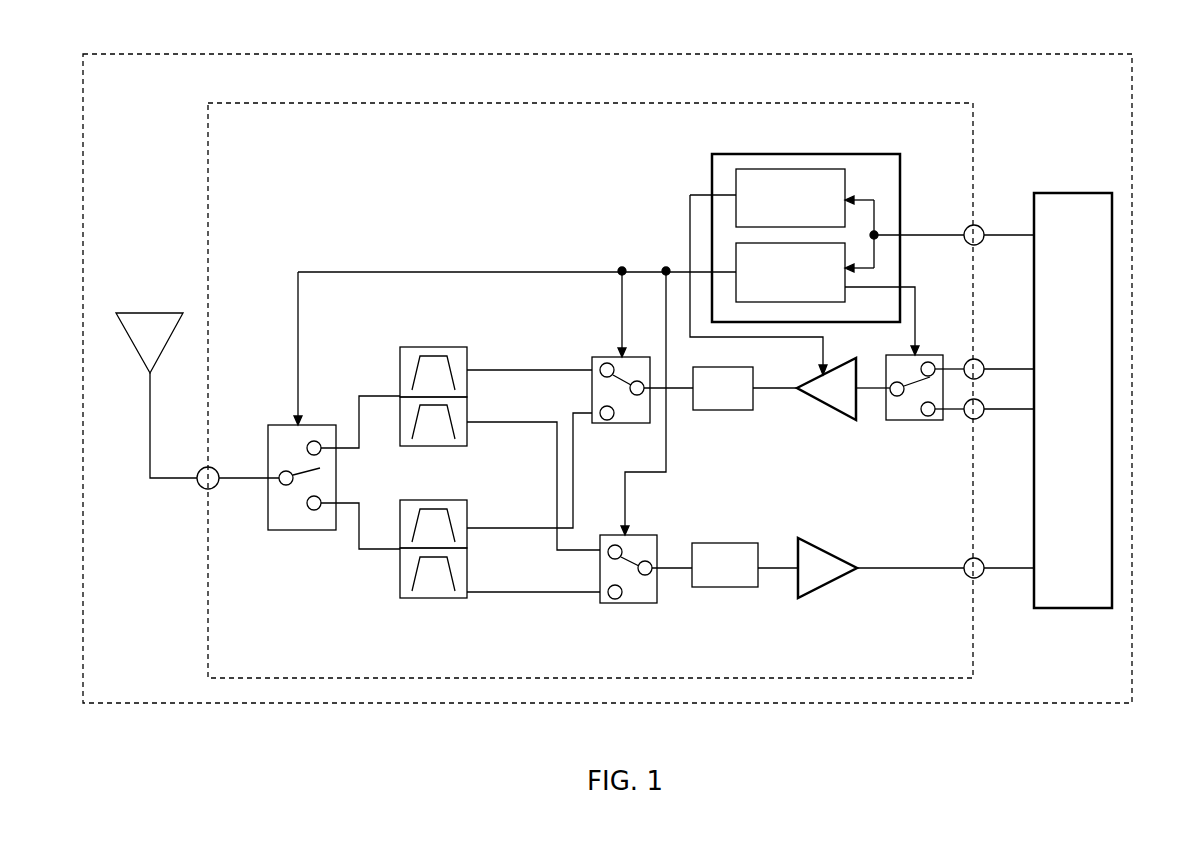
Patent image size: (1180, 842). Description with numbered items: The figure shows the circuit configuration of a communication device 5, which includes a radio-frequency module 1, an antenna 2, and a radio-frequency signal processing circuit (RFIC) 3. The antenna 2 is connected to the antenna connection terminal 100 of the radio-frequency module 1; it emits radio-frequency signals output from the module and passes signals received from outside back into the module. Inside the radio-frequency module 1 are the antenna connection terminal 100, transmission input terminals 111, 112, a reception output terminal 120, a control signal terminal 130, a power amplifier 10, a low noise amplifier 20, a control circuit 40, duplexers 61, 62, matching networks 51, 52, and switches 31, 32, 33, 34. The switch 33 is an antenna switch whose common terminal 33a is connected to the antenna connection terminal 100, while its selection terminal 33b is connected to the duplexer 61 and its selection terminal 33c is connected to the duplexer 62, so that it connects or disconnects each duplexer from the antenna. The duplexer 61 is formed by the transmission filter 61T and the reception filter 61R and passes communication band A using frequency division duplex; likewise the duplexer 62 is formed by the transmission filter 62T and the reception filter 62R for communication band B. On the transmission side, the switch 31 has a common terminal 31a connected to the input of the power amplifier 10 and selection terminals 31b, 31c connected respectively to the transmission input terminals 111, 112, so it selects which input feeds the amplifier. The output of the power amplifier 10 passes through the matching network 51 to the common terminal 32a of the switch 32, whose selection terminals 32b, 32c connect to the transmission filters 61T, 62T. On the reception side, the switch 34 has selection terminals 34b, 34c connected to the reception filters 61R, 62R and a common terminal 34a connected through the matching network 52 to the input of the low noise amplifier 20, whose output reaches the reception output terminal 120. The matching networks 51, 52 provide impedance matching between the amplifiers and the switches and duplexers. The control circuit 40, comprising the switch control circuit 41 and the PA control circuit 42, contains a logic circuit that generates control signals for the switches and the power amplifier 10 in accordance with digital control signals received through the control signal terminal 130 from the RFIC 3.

The communication device 5 is at (1119, 53).
The radio-frequency module 1 is at (728, 104).
The antenna 2 is at (155, 313).
The radio-frequency signal processing circuit (RFIC) 3 is at (1085, 193).
The antenna connection terminal 100 is at (201, 488).
The antenna switch 33 is at (282, 531).
The common terminal 33a is at (281, 471).
The selection terminal 33b is at (313, 441).
The selection terminal 33c is at (314, 512).
The duplexer 61 is at (500, 433).
The transmission filter 61T is at (468, 376).
The reception filter 61R is at (468, 415).
The duplexer 62 is at (500, 520).
The transmission filter 62T is at (468, 543).
The reception filter 62R is at (468, 583).
The second switch 32 is at (637, 357).
The common terminal 32a is at (637, 396).
The selection terminal 32b is at (606, 360).
The selection terminal 32c is at (608, 424).
The switch 34 is at (655, 603).
The common terminal 34a is at (645, 561).
The selection terminal 34b is at (613, 545).
The selection terminal 34c is at (616, 603).
The matching network 51 is at (726, 411).
The matching network 52 is at (727, 542).
The power amplifier 10 is at (822, 404).
The low noise amplifier 20 is at (829, 550).
The first switch 31 is at (915, 422).
The common terminal 31a is at (897, 397).
The selection terminal 31b is at (935, 361).
The selection terminal 31c is at (935, 416).
The control circuit 40 is at (898, 172).
The switch control circuit 41 is at (853, 291).
The PA control circuit 42 is at (848, 191).
The transmission input terminal 111 is at (982, 362).
The transmission input terminal 112 is at (982, 417).
The reception output terminal 120 is at (982, 576).
The control signal terminal 130 is at (981, 228).